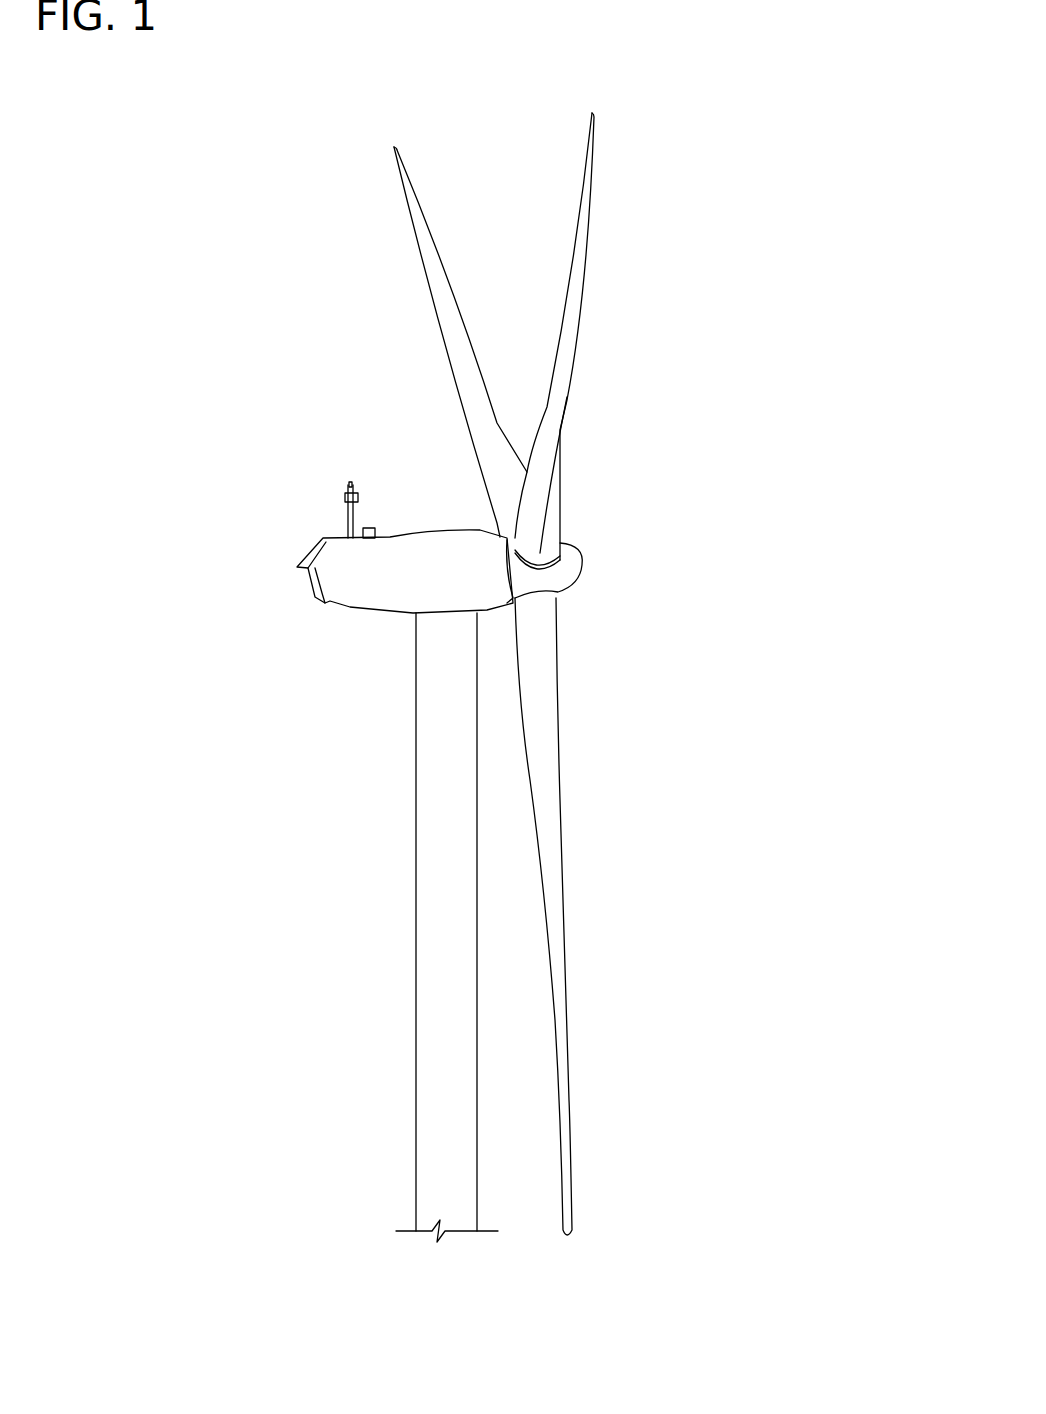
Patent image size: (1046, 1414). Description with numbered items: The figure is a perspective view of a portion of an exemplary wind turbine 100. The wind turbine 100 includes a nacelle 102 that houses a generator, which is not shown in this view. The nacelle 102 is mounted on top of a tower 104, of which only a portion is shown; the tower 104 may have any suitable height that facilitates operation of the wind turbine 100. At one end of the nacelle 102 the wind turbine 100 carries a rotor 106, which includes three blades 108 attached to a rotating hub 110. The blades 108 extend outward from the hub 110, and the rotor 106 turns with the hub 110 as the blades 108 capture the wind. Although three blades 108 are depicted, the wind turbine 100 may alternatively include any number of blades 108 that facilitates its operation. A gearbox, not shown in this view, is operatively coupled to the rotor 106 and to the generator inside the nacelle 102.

The wind turbine 100 is at (282, 186).
The nacelle 102 is at (341, 615).
The tower 104 is at (415, 873).
The rotor 106 is at (636, 317).
The blades 108 is at (432, 228).
The rotating hub 110 is at (577, 578).